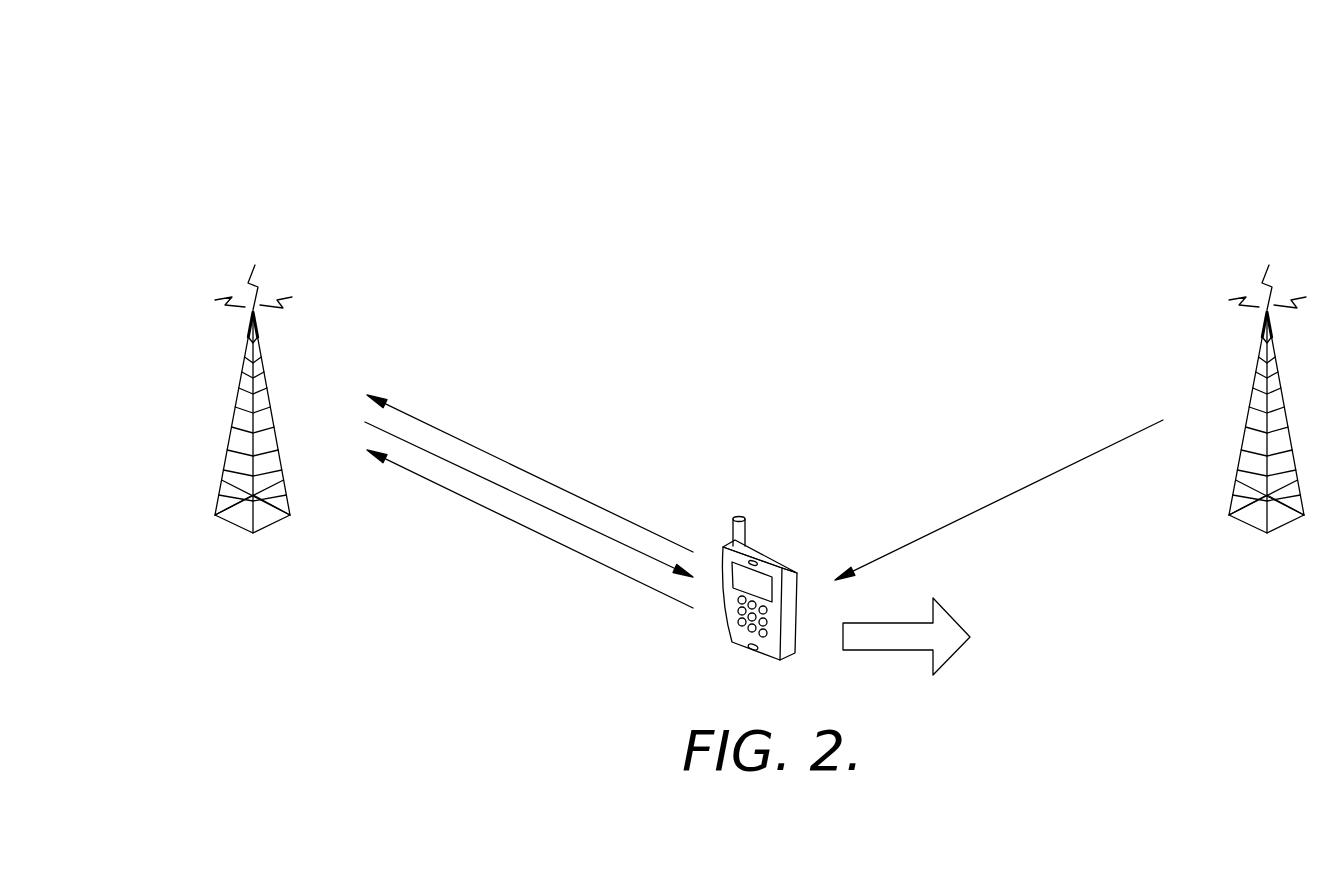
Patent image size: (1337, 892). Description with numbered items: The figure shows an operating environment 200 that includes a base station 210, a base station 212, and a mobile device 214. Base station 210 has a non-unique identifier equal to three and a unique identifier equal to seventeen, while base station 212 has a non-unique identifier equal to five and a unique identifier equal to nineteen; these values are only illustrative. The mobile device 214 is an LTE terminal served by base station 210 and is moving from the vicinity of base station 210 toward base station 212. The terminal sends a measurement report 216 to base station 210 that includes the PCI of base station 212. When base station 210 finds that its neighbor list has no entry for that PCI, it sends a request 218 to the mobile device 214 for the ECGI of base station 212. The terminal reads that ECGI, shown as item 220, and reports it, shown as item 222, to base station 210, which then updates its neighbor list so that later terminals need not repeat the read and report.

The operating environment 200 is at (457, 100).
The base station 210 is at (232, 418).
The base station 212 is at (1290, 418).
The mobile device 214 is at (752, 660).
The measurement report 216 is at (492, 512).
The request 218 is at (572, 523).
The reading of ECGI 220 is at (1027, 487).
The report of ECGI 222 is at (493, 453).